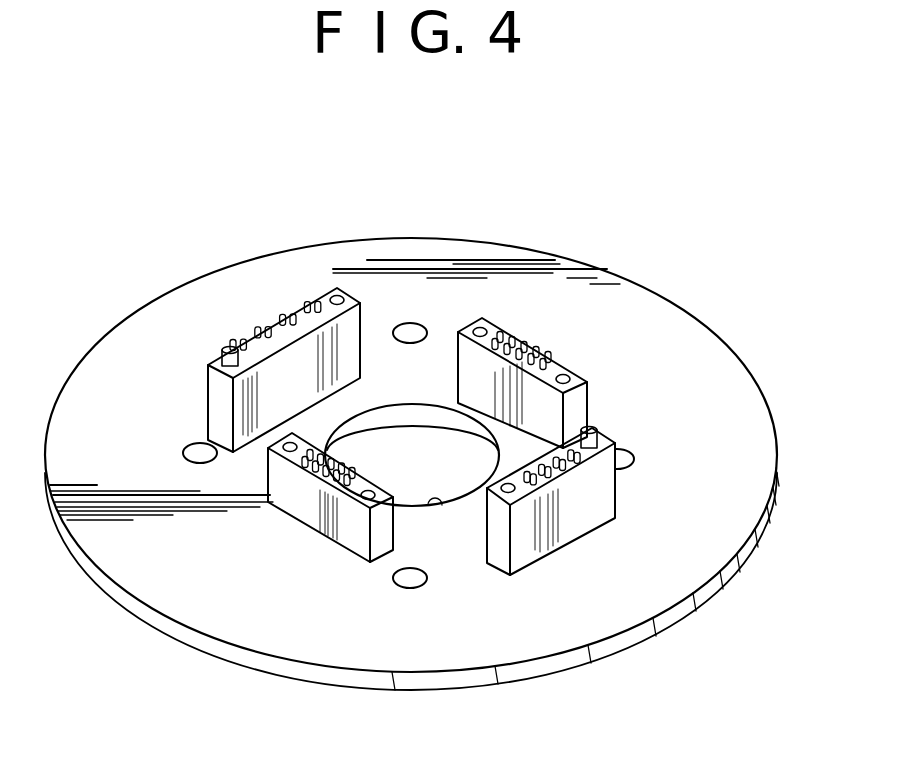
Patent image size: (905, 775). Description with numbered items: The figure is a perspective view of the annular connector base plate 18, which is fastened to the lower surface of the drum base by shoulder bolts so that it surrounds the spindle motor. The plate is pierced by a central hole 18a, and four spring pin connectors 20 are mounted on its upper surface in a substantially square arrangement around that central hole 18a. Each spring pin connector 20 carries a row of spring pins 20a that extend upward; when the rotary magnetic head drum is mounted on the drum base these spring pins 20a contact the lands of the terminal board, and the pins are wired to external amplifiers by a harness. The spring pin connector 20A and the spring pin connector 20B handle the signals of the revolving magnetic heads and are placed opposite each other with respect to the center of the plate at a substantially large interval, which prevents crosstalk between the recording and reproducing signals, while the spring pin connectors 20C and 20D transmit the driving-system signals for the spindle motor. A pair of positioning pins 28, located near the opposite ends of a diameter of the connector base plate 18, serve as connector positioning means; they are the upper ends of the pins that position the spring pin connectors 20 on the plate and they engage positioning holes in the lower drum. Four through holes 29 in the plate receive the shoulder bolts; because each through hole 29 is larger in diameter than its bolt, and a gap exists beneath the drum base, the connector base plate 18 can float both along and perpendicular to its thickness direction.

The connector base plate 18 is at (530, 637).
The central hole 18a is at (442, 505).
The spring pin connector 20 is at (448, 462).
The spring pin connector 20A is at (302, 300).
The spring pin connector 20B is at (598, 535).
The spring pin connector 20C is at (307, 528).
The spring pin connector 20D is at (549, 344).
The spring pin 20a is at (275, 327).
The positioning pin 28 is at (223, 353).
The through hole 29 is at (404, 324).